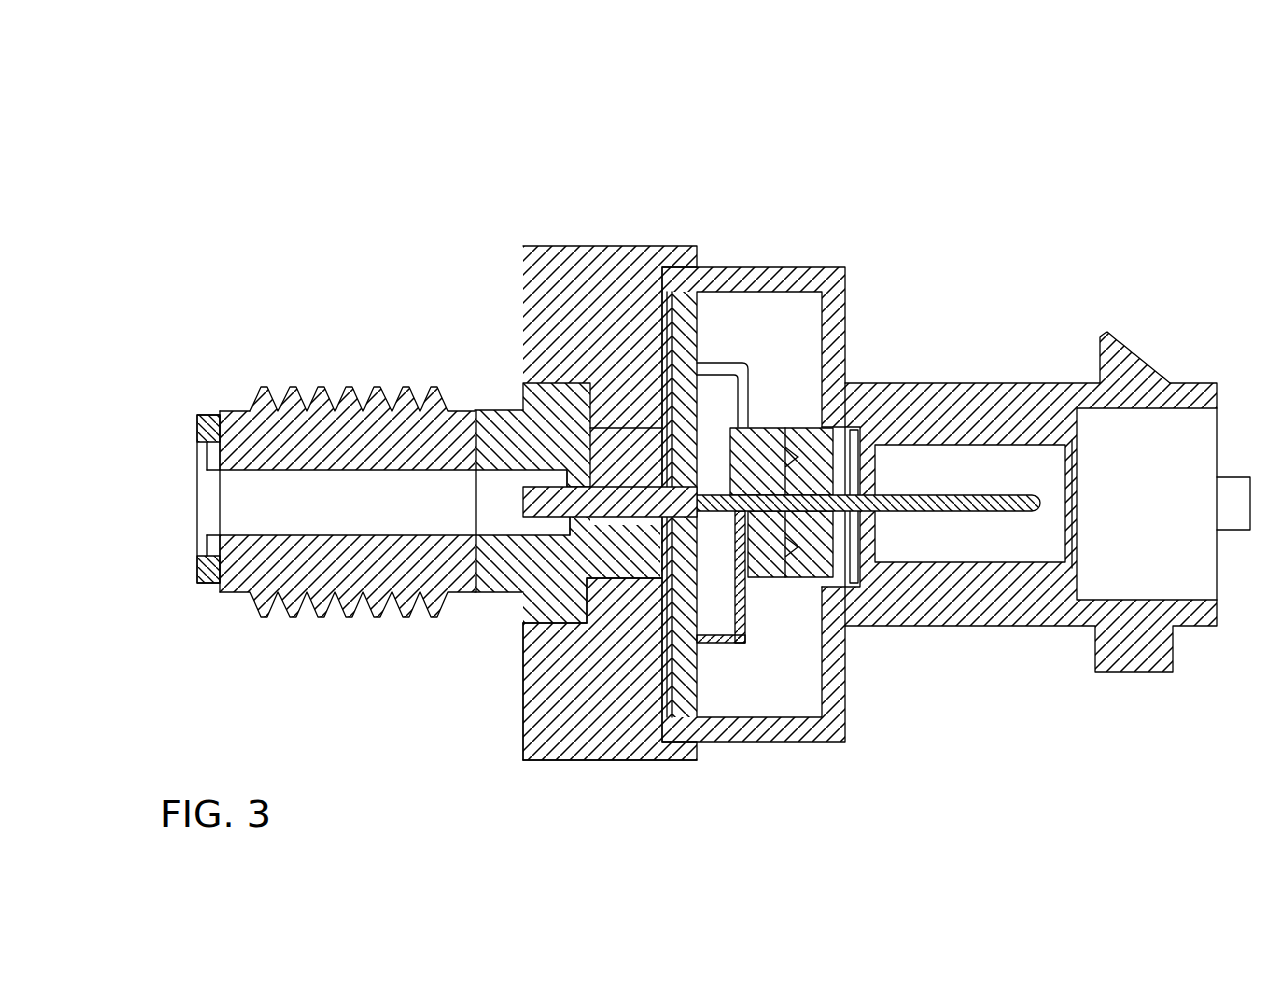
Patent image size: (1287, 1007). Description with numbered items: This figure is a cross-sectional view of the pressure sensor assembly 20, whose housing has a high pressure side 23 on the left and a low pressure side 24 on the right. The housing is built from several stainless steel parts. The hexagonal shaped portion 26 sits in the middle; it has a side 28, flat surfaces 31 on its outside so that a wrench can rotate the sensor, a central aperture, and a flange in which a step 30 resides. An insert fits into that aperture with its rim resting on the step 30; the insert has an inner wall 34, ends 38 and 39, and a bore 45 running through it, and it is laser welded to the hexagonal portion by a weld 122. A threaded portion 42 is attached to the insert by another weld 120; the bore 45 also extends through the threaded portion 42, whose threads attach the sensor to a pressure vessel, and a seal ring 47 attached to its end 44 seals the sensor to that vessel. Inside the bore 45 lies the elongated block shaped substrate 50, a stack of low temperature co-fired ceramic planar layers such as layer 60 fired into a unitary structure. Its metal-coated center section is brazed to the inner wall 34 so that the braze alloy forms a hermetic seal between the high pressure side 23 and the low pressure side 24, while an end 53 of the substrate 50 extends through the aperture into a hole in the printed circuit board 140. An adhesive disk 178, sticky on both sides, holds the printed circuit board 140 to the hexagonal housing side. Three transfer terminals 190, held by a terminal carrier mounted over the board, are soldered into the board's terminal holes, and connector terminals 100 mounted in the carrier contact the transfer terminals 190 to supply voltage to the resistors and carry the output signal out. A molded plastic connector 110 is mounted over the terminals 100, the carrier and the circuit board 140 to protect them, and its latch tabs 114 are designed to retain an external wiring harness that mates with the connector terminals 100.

The pressure sensor assembly 20 is at (685, 459).
The high pressure side 23 is at (390, 485).
The low pressure side 24 is at (953, 456).
The hexagonal shaped portion 26 is at (545, 479).
The side 28 is at (523, 741).
The step 30 is at (594, 432).
The flat surfaces 31 is at (582, 760).
The inner wall 34 is at (593, 487).
The end 38 is at (628, 578).
The end 39 is at (500, 593).
The threaded portion 42 is at (321, 378).
The end 44 is at (243, 410).
The bore 45 is at (298, 510).
The seal ring 47 is at (200, 428).
The substrate 50 is at (550, 527).
The end 53 is at (522, 500).
The planar layer 60 is at (588, 468).
The connector terminals 100 is at (925, 497).
The connector 110 is at (992, 633).
The latch tabs 114 is at (1102, 338).
The weld 120 is at (458, 616).
The weld 122 is at (523, 623).
The printed circuit board 140 is at (698, 328).
The adhesive disk 178 is at (660, 640).
The transfer terminals 190 is at (740, 643).